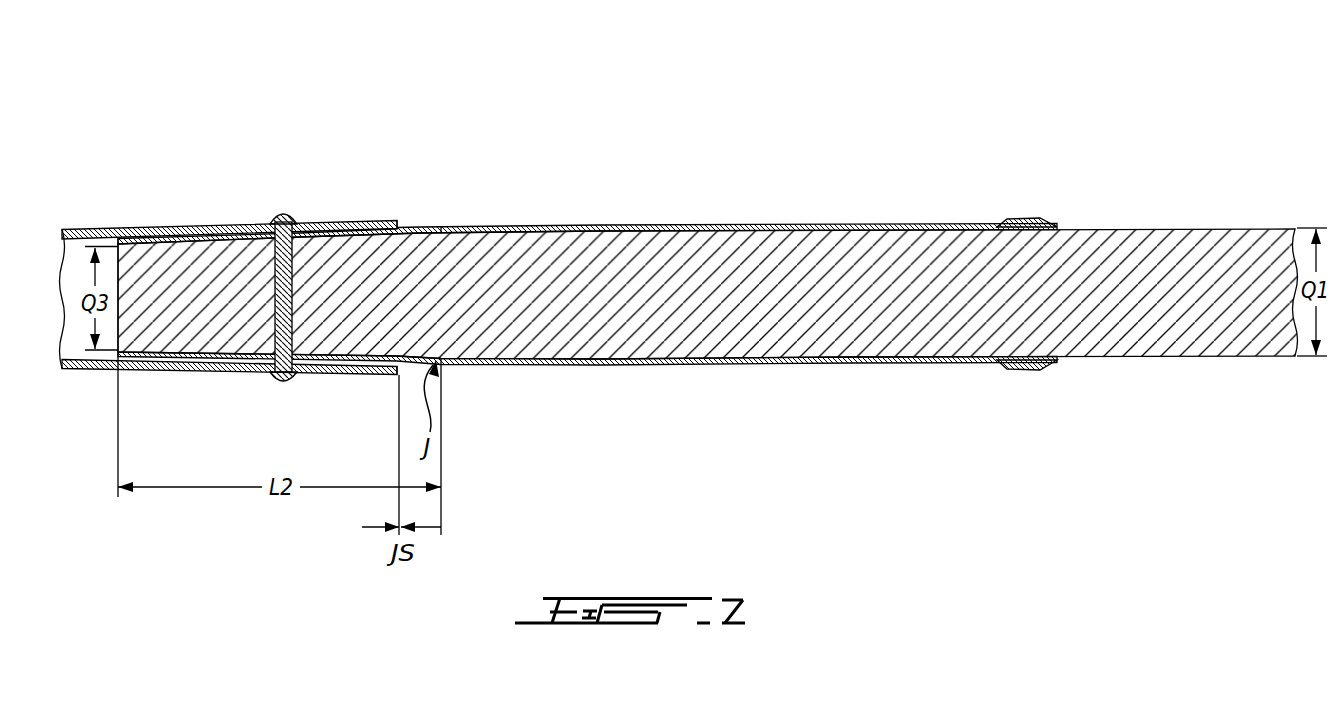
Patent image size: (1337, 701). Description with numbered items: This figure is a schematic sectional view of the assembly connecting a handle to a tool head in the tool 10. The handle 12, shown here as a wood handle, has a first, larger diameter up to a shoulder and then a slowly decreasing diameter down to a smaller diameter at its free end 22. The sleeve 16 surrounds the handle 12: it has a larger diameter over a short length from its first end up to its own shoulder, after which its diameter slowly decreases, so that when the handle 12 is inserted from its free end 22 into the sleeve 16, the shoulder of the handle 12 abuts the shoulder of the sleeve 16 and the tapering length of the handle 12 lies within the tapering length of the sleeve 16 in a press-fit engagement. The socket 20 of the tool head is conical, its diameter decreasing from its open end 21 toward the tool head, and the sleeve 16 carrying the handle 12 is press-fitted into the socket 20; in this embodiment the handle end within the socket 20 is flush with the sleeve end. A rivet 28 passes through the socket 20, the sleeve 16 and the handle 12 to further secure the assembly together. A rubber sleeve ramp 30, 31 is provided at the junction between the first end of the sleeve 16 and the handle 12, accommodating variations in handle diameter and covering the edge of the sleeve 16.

The tool 10 is at (679, 310).
The handle 12 is at (1193, 226).
The sleeve 16 is at (687, 223).
The socket 20 is at (226, 221).
The open end 21 is at (397, 221).
The free end 22 is at (117, 337).
The rivets 28 is at (282, 380).
The rubber sleeve ramp 30 is at (1033, 359).
The rubber sleeve ramp 31 is at (1019, 370).